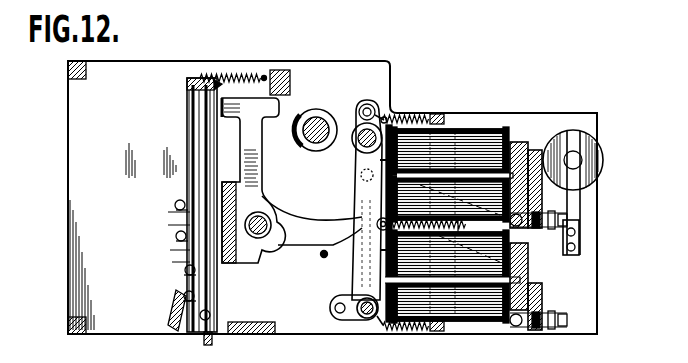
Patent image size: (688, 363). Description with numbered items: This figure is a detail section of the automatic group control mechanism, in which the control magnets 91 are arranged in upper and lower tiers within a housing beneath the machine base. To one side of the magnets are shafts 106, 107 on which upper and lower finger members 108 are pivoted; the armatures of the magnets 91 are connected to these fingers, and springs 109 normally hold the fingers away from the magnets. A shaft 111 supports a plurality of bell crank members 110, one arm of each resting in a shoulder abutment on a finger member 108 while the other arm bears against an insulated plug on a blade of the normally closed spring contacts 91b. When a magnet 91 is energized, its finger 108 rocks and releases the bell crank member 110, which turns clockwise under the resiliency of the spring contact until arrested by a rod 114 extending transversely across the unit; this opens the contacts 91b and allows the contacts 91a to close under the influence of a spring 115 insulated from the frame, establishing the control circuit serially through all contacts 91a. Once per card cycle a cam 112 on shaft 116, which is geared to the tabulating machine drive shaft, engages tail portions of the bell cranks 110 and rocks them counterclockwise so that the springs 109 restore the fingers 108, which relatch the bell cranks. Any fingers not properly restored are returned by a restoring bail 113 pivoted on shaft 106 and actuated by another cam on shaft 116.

The control magnet 91 is at (482, 144).
The contacts 91a is at (193, 105).
The spring contacts 91b is at (190, 80).
The shaft 106 is at (386, 116).
The shaft 107 is at (362, 320).
The finger member 108 is at (370, 190).
The spring 109 is at (407, 114).
The bell crank member 110 is at (258, 164).
The shaft 111 is at (260, 242).
The cam 112 is at (305, 106).
The restoring bail 113 is at (362, 207).
The rod 114 is at (321, 258).
The spring 115 is at (243, 77).
The shaft 116 is at (322, 118).